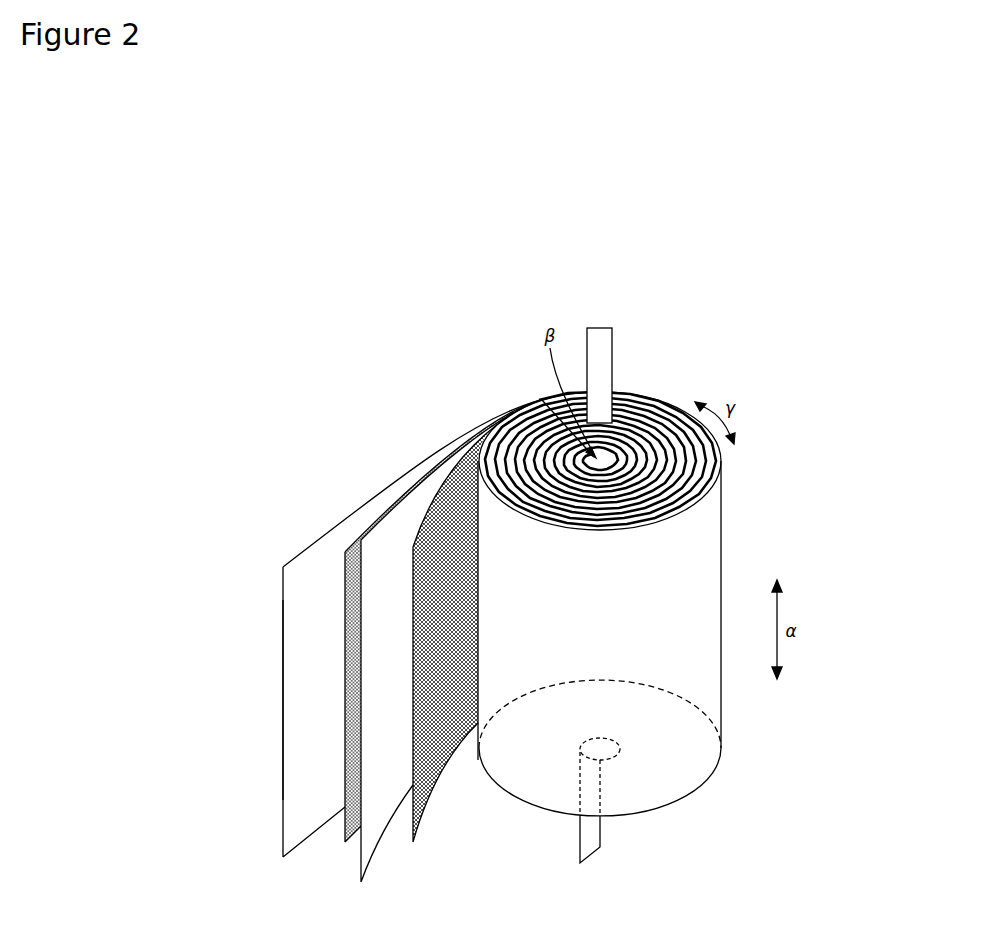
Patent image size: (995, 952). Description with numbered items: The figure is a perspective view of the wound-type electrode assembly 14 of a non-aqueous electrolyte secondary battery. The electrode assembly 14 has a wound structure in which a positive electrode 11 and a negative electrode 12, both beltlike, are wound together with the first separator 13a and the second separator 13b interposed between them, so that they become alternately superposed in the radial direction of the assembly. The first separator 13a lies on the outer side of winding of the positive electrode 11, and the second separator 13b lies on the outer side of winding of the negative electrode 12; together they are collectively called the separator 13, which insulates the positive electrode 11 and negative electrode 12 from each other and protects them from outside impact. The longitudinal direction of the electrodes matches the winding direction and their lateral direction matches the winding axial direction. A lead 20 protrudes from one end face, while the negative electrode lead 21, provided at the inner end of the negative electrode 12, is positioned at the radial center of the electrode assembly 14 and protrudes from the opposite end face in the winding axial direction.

The positive electrode 11 is at (452, 443).
The negative electrode 12 is at (367, 535).
The separator 13 is at (208, 658).
The first separator 13a is at (385, 677).
The second separator 13b is at (313, 744).
The electrode assembly 14 is at (662, 398).
The positive electrode tab 20 is at (602, 335).
The negative electrode lead 21 is at (595, 850).